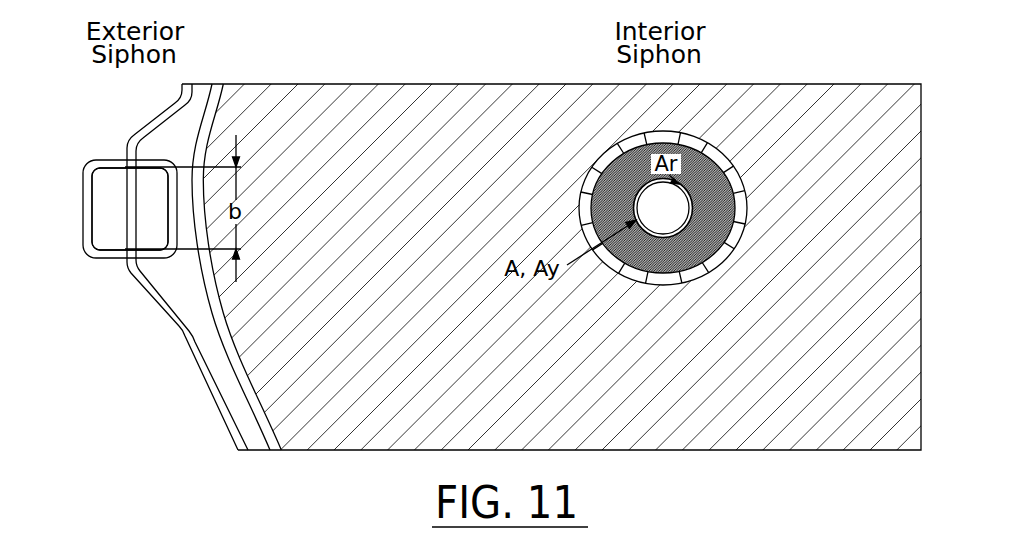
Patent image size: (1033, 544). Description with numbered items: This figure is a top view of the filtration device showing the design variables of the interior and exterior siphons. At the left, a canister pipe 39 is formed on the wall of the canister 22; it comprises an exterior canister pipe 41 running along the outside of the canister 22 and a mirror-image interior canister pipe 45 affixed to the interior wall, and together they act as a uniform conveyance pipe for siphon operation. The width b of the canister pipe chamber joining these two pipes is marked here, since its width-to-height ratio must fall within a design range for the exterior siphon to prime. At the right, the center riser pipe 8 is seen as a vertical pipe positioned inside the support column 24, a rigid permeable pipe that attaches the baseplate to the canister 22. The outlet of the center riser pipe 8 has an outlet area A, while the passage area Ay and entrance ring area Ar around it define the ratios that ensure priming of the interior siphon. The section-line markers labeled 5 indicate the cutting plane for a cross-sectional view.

The section line 5- 5 is at (78, 212).
The center riser pipe 8 is at (662, 240).
The canister 22 is at (213, 412).
The support column 24 is at (677, 131).
The canister pipe 39 is at (83, 229).
The exterior canister pipe 41 is at (113, 222).
The interior canister pipe 45 is at (143, 222).